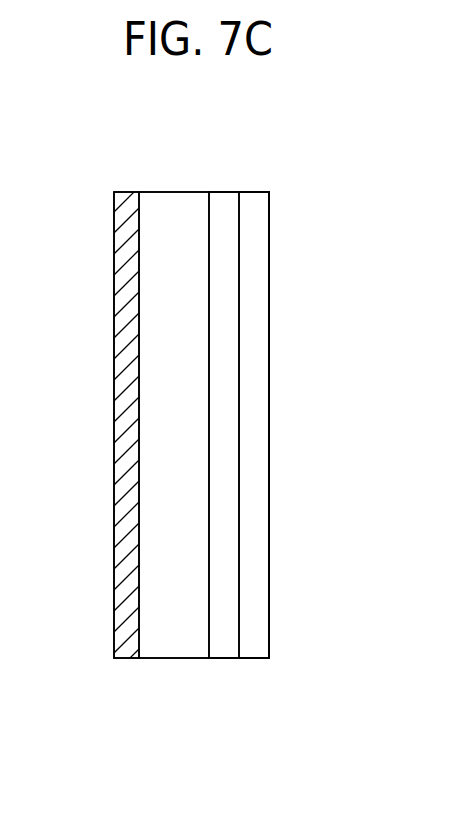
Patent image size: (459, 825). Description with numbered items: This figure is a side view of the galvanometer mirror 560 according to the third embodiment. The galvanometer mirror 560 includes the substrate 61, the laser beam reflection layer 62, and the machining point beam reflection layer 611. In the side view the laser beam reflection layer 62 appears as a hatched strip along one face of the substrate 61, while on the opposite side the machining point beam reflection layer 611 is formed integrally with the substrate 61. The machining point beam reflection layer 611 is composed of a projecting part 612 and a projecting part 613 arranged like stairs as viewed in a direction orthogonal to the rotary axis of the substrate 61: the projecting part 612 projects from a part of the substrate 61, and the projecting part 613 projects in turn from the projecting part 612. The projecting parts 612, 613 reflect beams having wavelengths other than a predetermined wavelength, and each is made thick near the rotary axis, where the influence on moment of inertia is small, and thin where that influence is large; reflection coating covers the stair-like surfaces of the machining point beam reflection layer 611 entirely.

The galvanometer mirror 560 is at (243, 150).
The substrate 61 is at (173, 205).
The laser beam reflection layer 62 is at (128, 643).
The machining point beam reflection layer 611 is at (303, 726).
The projecting part 612 is at (225, 647).
The projecting part 613 is at (253, 647).